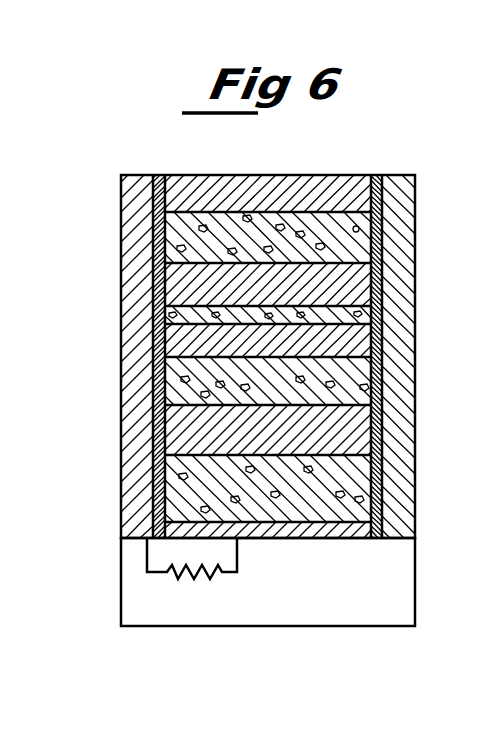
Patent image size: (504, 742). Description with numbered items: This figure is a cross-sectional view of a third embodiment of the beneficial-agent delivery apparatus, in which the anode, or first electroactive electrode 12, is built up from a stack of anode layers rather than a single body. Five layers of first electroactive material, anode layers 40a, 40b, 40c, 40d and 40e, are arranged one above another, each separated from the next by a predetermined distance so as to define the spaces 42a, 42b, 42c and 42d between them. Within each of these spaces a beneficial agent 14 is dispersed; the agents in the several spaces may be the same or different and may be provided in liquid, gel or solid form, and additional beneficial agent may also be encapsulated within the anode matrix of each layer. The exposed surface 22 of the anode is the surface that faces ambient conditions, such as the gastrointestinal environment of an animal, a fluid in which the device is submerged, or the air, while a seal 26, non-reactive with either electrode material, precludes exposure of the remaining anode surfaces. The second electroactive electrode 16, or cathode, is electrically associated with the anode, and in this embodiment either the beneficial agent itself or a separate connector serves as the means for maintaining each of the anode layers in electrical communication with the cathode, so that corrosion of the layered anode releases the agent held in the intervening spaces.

The first electroactive electrode 12 is at (290, 170).
The beneficial agent 14 is at (359, 229).
The second electroactive electrode 16 is at (424, 329).
The exposed surface 22 is at (240, 175).
The seal 26 is at (376, 175).
The anode layer 40a is at (173, 192).
The anode layer 40b is at (175, 277).
The anode layer 40c is at (173, 340).
The anode layer 40d is at (173, 428).
The anode layer 40e is at (173, 530).
The space 42a is at (175, 233).
The space 42b is at (173, 312).
The space 42c is at (173, 380).
The space 42d is at (173, 474).